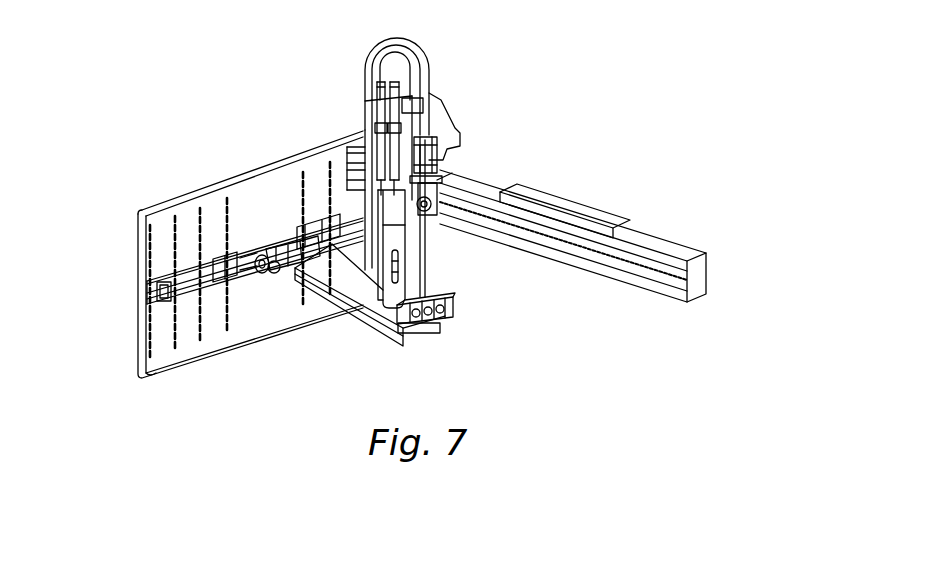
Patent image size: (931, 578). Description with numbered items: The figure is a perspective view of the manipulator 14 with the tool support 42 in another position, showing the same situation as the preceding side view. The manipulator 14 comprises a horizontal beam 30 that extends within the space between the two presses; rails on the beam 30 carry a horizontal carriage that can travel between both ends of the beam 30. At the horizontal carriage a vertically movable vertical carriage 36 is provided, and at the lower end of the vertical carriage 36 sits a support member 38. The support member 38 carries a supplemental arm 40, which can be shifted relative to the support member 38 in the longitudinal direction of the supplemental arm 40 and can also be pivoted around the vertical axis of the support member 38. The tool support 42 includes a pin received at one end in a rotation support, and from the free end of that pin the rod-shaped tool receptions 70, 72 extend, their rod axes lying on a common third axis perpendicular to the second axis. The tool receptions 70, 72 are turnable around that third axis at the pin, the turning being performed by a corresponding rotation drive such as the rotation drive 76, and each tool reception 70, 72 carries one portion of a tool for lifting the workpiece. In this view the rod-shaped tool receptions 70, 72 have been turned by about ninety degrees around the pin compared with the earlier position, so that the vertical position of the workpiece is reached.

The manipulator 14 is at (540, 121).
The horizontal beam 30 is at (632, 270).
The vertical carriage 36 is at (402, 277).
The support member 38 is at (440, 327).
The supplemental arm 40 is at (357, 303).
The tool support 42 is at (272, 272).
The tool reception 70 is at (185, 275).
The tool reception 72 is at (343, 224).
The rotation drive 76 is at (253, 193).